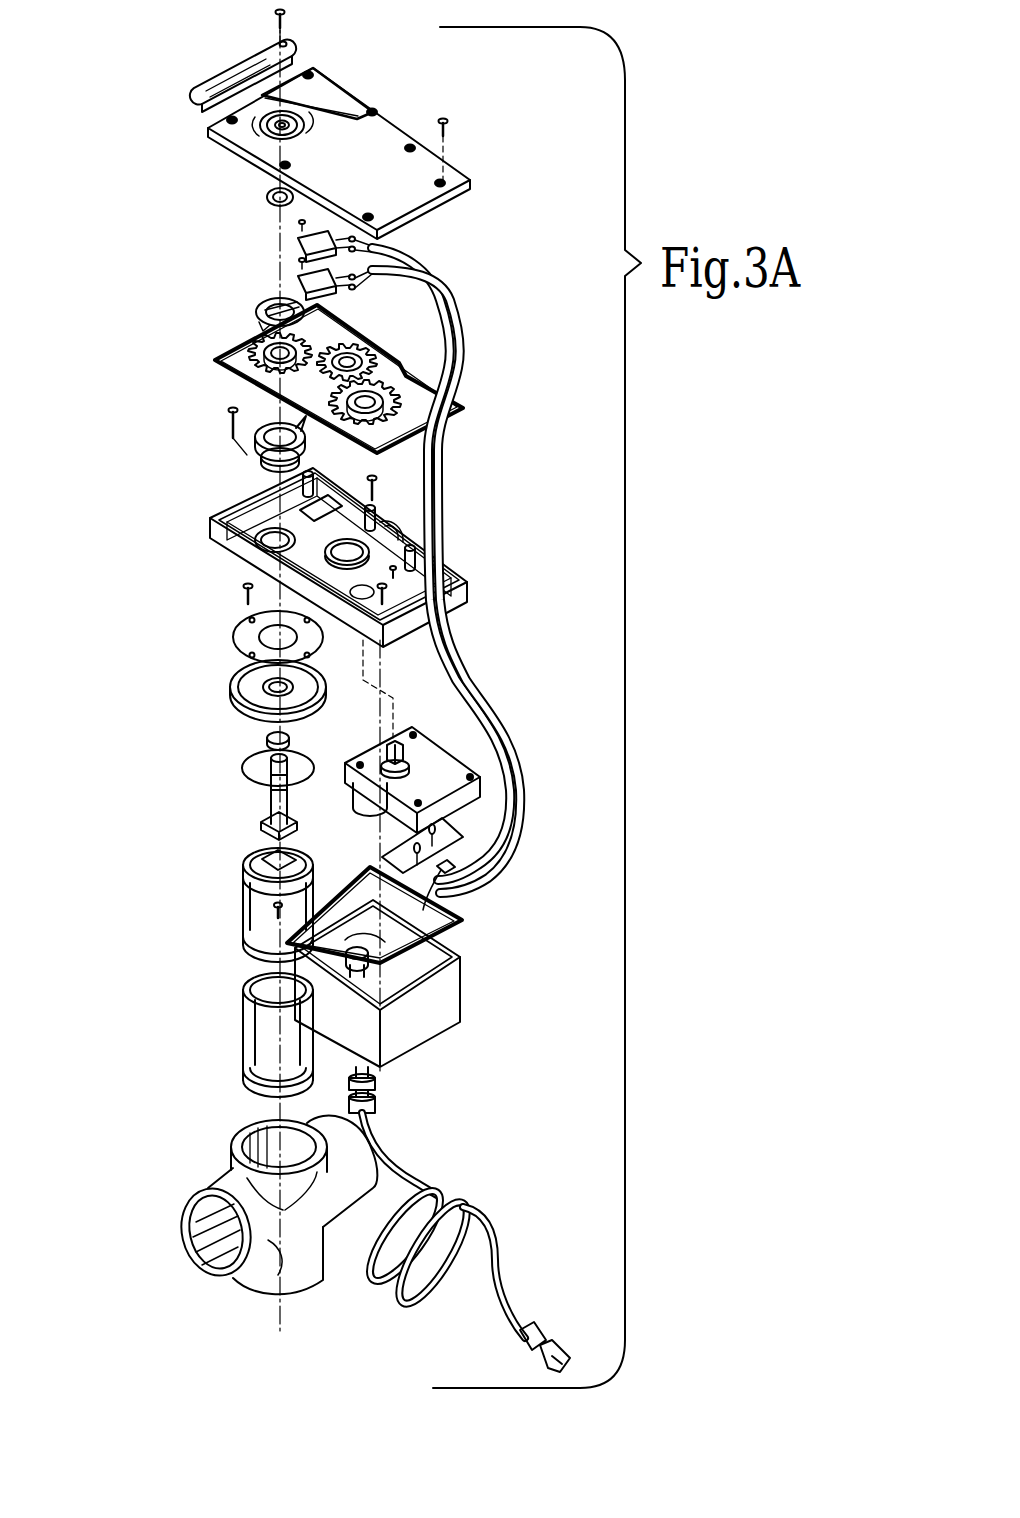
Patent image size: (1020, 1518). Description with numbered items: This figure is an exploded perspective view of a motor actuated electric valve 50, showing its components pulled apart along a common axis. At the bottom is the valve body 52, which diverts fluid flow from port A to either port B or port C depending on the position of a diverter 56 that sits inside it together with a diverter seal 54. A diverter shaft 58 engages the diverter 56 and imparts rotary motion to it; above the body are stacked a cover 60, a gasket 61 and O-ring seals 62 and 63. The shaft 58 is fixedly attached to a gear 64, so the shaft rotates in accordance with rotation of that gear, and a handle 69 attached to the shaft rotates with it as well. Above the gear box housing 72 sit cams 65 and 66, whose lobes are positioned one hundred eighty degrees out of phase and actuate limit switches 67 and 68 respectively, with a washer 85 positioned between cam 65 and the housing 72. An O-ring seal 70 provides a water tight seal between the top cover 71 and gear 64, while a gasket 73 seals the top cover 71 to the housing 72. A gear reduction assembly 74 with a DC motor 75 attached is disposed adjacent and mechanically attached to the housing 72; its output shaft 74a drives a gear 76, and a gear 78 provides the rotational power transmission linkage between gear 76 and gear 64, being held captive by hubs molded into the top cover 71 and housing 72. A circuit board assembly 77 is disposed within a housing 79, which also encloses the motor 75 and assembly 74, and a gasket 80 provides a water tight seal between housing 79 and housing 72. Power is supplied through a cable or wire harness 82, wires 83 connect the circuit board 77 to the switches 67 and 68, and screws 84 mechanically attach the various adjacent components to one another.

The motor actuated electric valve 50 is at (249, 1321).
The valve body 52 is at (183, 1202).
The diverter seal 54 is at (245, 994).
The diverter 56 is at (243, 868).
The diverter shaft 58 is at (268, 806).
The cover 60 is at (232, 688).
The gasket 61 is at (234, 638).
The O-ring seal 62 is at (243, 770).
The O-ring seal 63 is at (267, 739).
The gear 64 is at (227, 342).
The cam 65 is at (262, 428).
The cam 66 is at (256, 312).
The limit switch 67 is at (298, 279).
The limit switch 68 is at (298, 241).
The handle 69 is at (196, 92).
The O-ring seal 70 is at (266, 197).
The top cover 71 is at (208, 130).
The gear box housing 72 is at (210, 532).
The gasket 73 is at (468, 410).
The gear reduction assembly 74 is at (445, 749).
The output shaft 74a is at (413, 742).
The DC motor 75 is at (358, 806).
The gear 76 is at (400, 392).
The circuit board assembly 77 is at (466, 839).
The gear 78 is at (348, 348).
The housing 79 is at (462, 1012).
The gasket 80 is at (464, 921).
The cable or wire harness 82 is at (468, 1213).
The wires 83 is at (526, 738).
The screws 84 is at (276, 14).
The washer 85 is at (266, 461).
The port A is at (293, 1300).
The port B is at (197, 1246).
The port C is at (370, 1153).